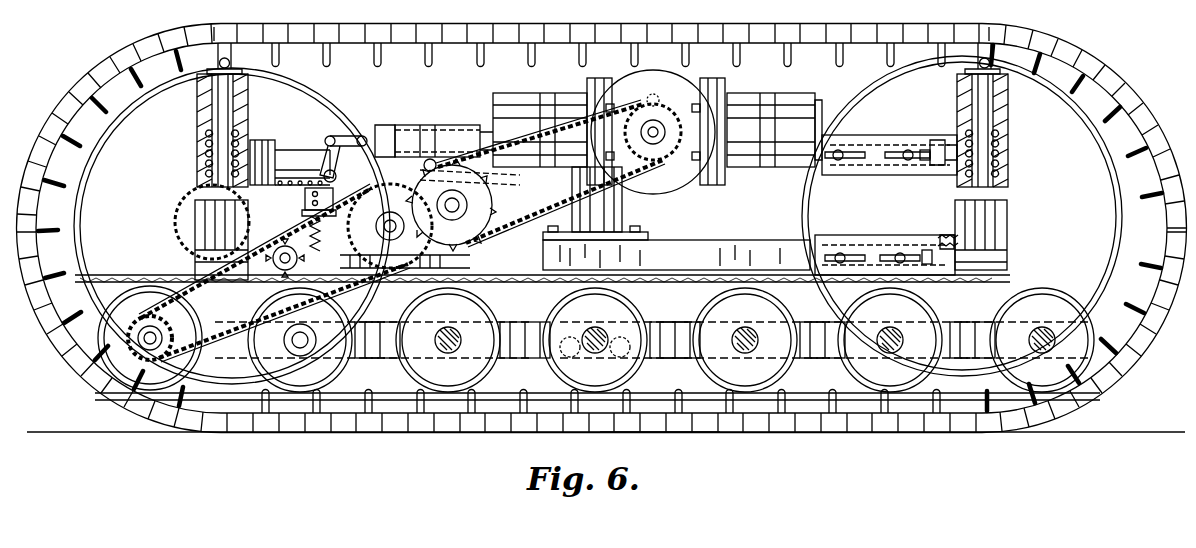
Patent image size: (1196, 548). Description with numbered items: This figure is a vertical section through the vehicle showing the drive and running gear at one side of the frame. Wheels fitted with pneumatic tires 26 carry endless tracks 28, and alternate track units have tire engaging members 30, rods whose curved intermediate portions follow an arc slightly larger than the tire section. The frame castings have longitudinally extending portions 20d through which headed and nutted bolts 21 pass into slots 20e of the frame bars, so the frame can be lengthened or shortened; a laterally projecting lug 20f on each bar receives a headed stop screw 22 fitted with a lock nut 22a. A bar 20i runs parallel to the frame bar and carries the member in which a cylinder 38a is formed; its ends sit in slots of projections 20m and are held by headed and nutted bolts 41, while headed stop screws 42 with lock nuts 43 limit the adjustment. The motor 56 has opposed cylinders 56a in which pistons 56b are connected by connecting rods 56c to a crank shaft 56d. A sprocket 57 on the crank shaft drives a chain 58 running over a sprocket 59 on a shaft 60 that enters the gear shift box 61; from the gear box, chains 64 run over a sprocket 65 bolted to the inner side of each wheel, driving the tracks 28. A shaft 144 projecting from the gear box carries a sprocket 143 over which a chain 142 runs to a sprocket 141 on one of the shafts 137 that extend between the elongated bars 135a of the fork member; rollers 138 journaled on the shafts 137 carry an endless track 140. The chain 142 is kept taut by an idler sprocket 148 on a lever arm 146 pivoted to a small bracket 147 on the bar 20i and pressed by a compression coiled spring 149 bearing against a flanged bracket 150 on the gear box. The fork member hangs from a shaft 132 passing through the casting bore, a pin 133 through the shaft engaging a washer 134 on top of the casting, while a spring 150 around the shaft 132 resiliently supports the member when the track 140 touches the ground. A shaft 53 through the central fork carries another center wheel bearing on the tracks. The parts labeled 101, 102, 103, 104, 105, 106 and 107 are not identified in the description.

The endless tracks 28 is at (385, 30).
The tire engaging members 30 is at (386, 57).
The pin 133 is at (215, 45).
The endless track 140 is at (662, 402).
The washer 134 is at (205, 90).
The pneumatic tires 26 is at (130, 90).
The shaft 132 is at (250, 84).
The spring 150 is at (198, 156).
The sprocket 65 is at (178, 214).
The chains 64 is at (272, 150).
The link 106 is at (315, 150).
The bar 107 is at (312, 152).
The lever 105 is at (343, 136).
The block 104 is at (382, 125).
The rod 102 is at (405, 125).
The control box 103 is at (428, 125).
The connection 101 is at (468, 125).
The opposed cylinders 56a is at (512, 100).
The motor 56 is at (695, 65).
The crank shaft 56d is at (650, 90).
The connecting rods 56c is at (690, 100).
The pistons 56b is at (790, 118).
The sprocket 57 is at (660, 160).
The chain 58 is at (545, 165).
The sprocket 59 is at (480, 175).
The shaft 60 is at (490, 205).
The gear shift box 61 is at (438, 168).
The shaft 144 is at (452, 215).
The small bracket 147 is at (392, 240).
The sprocket 143 is at (445, 252).
The idler sprocket 148 is at (283, 247).
The compression coiled spring 149 is at (305, 200).
The cylinder 38a is at (630, 225).
The bar 20i is at (705, 245).
The slots 20e is at (850, 150).
The longitudinally extending portions 20d is at (910, 150).
The headed and nutted bolts 21 is at (890, 155).
The stop screw 22 is at (920, 175).
The lug 20f is at (950, 188).
The lock nut 22a is at (940, 215).
The lock nuts 43 is at (950, 235).
The projections 20m is at (885, 245).
The headed and nutted bolts 41 is at (852, 256).
The stop screws 42 is at (935, 248).
The chain 142 is at (380, 283).
The lever arm 146 is at (325, 320).
The sprocket 141 is at (152, 362).
The shafts 137 is at (446, 327).
The rollers 138 is at (560, 310).
The shaft 53 is at (595, 327).
The elongated bars 135a is at (672, 325).